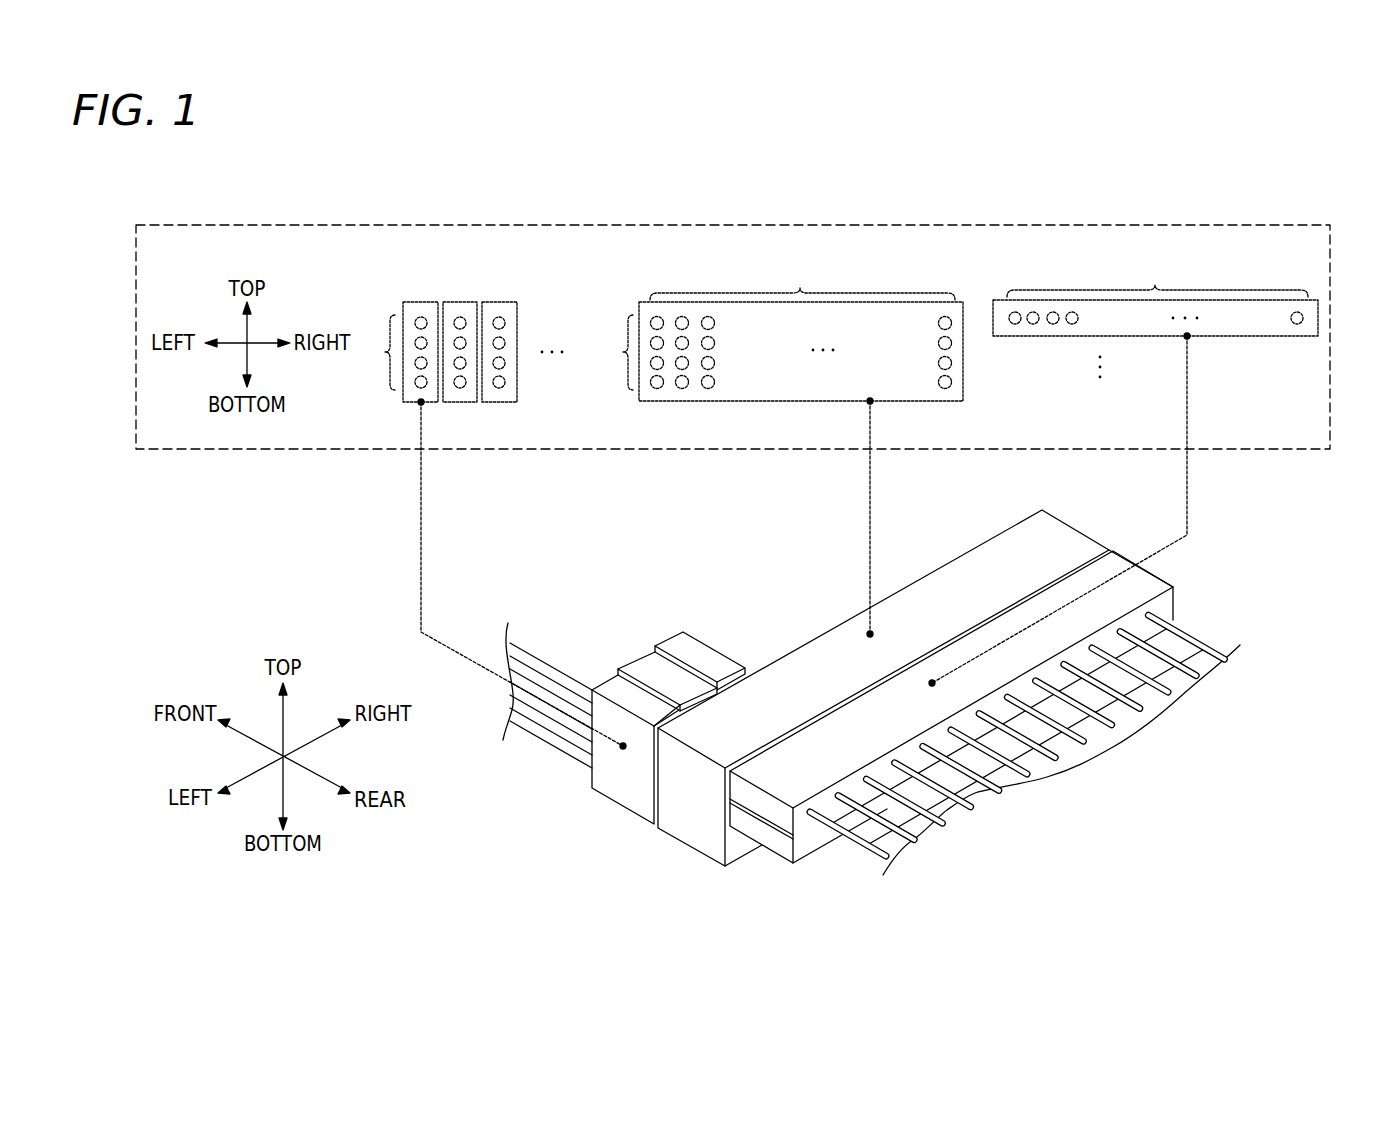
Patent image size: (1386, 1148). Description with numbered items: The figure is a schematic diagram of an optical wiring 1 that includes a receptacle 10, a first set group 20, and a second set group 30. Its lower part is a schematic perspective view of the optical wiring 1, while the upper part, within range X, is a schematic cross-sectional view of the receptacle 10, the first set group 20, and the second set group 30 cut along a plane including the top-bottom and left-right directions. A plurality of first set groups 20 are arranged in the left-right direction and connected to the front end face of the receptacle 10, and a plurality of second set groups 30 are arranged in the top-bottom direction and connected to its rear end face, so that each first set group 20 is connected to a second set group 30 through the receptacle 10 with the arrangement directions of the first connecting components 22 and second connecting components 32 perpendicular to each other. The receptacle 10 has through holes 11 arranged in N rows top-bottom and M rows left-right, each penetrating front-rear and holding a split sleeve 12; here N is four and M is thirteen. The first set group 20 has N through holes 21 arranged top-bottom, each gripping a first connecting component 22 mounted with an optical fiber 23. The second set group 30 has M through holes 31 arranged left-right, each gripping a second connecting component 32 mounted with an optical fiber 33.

The optical wiring 1 is at (573, 850).
The receptacle 10 is at (850, 567).
The through hole 11 is at (685, 283).
The split sleeve 12 is at (658, 316).
The first set group 20 is at (560, 537).
The through hole 21 is at (458, 282).
The first connecting component 22 is at (422, 317).
The optical fiber 23 is at (547, 663).
The second set group 30 is at (1024, 549).
The through hole 31 is at (1042, 280).
The second connecting component 32 is at (1016, 311).
The optical fiber 33 is at (1192, 637).
The range X is at (428, 224).
The number of rows in the left-right direction M is at (979, 281).
The number of rows in the top-bottom direction N is at (500, 352).